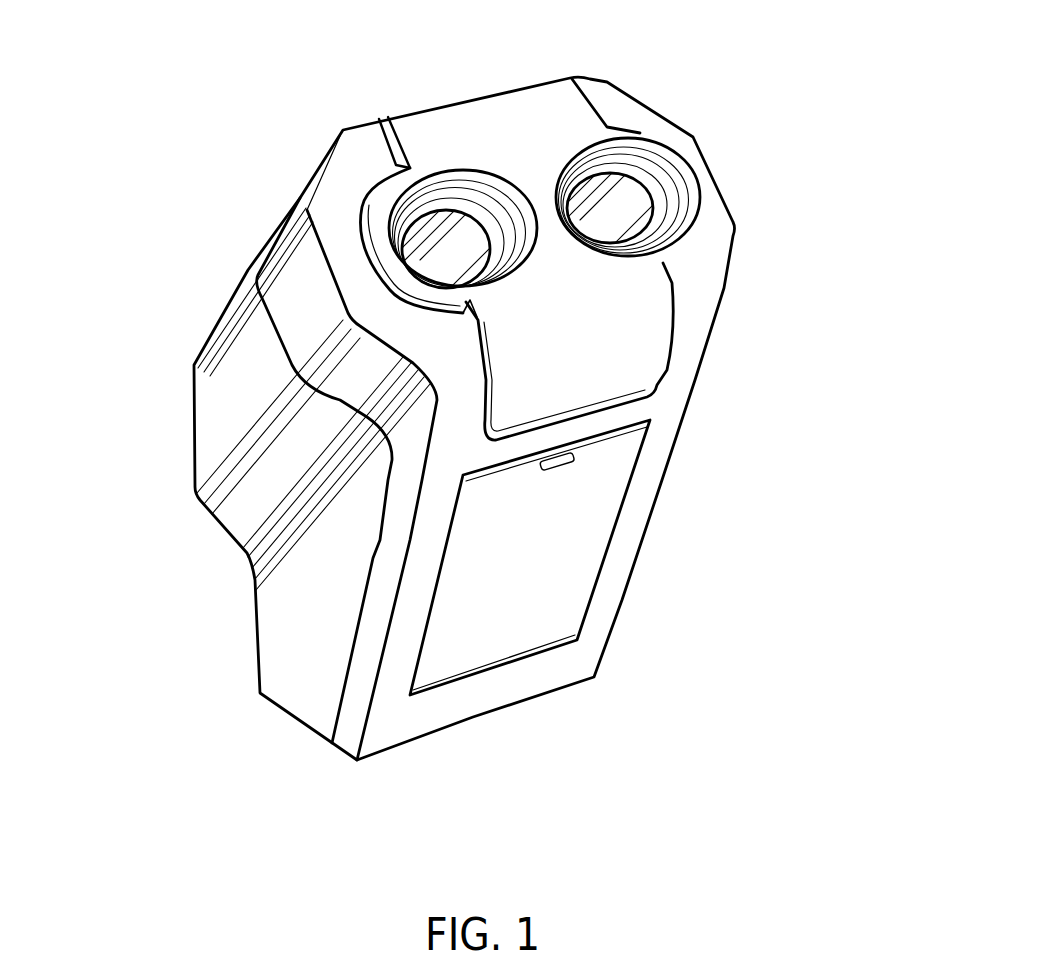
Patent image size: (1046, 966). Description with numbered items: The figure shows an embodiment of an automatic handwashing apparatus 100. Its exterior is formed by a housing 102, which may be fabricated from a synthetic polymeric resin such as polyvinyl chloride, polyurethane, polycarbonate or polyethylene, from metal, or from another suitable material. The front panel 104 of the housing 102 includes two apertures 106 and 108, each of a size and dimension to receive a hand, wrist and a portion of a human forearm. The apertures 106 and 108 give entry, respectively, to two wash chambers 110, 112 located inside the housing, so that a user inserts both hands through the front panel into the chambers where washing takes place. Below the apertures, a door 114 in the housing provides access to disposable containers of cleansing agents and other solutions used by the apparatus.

The handwashing apparatus 100 is at (742, 334).
The housing 102 is at (225, 387).
The front panel 104 is at (438, 125).
The aperture 106 is at (420, 233).
The aperture 108 is at (613, 177).
The wash chamber 110 is at (428, 265).
The wash chamber 112 is at (591, 226).
The door 114 is at (557, 573).